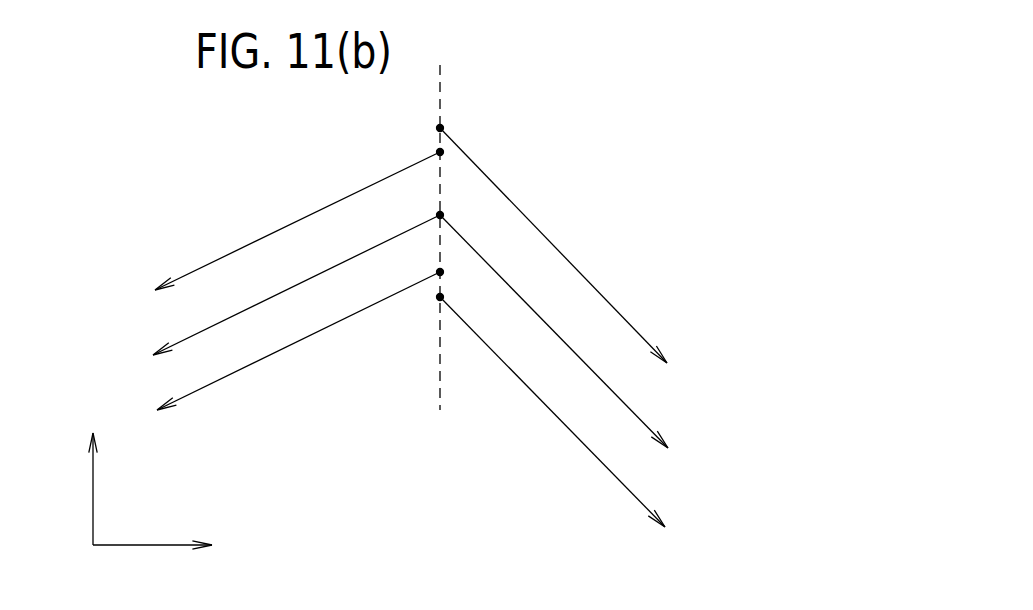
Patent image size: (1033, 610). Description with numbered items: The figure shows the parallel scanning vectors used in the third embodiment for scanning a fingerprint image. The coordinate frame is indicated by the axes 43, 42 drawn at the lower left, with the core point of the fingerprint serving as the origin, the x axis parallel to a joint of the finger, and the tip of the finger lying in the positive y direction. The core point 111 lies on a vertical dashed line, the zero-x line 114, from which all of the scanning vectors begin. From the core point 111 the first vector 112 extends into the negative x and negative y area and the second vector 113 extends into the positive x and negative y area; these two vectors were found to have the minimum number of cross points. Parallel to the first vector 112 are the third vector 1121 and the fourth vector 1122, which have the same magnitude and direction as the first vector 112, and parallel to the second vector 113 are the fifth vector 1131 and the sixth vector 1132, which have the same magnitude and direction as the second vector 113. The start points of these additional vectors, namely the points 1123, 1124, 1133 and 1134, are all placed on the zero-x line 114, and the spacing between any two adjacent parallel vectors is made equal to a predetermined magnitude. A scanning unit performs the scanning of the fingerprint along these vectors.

The x=0 line 114 is at (440, 68).
The third vector 1121 is at (280, 228).
The first vector 112 is at (243, 310).
The fourth vector 1122 is at (257, 358).
The fifth vector 1131 is at (640, 337).
The second vector 113 is at (630, 408).
The sixth vector 1132 is at (638, 502).
The start point 1133 is at (440, 128).
The start point 1123 is at (438, 151).
The core point 111 is at (440, 215).
The start point 1124 is at (440, 272).
The start point 1134 is at (440, 297).
The y axis 43 is at (93, 498).
The x axis 42 is at (165, 545).